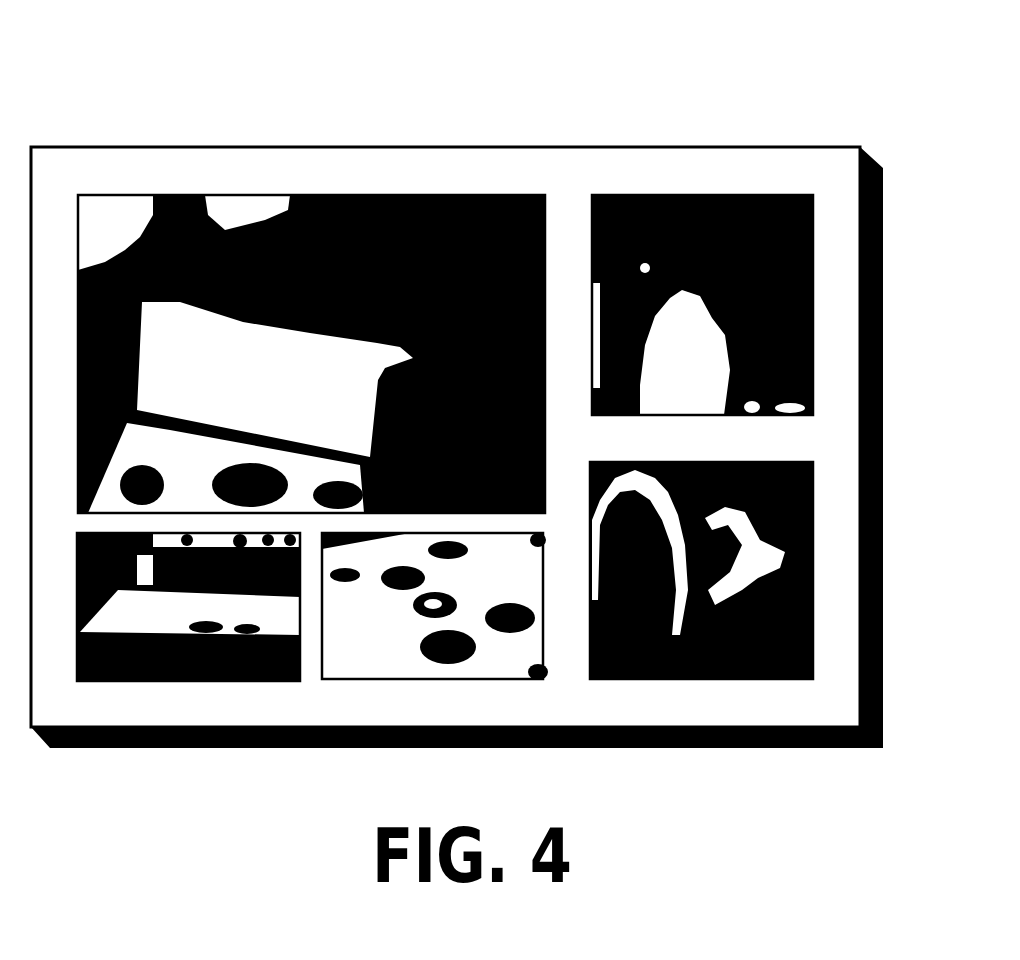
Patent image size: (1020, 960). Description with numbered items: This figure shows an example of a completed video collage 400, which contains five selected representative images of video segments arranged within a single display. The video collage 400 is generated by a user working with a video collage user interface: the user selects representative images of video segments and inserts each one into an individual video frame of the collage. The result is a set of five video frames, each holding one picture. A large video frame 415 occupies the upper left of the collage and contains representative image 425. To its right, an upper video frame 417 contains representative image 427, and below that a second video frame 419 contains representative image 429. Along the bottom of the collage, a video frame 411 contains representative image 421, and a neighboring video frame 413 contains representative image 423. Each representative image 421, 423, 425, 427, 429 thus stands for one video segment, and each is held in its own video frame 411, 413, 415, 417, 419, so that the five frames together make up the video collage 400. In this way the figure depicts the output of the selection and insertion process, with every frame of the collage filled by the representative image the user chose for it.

The video collage 400 is at (740, 34).
The video frame 411 is at (239, 681).
The video frame 413 is at (478, 680).
The video frame 415 is at (207, 200).
The video frame 417 is at (722, 200).
The video frame 419 is at (703, 679).
The representative image 421 is at (167, 660).
The representative image 423 is at (404, 660).
The representative image 425 is at (123, 210).
The representative image 427 is at (646, 213).
The representative image 429 is at (640, 679).